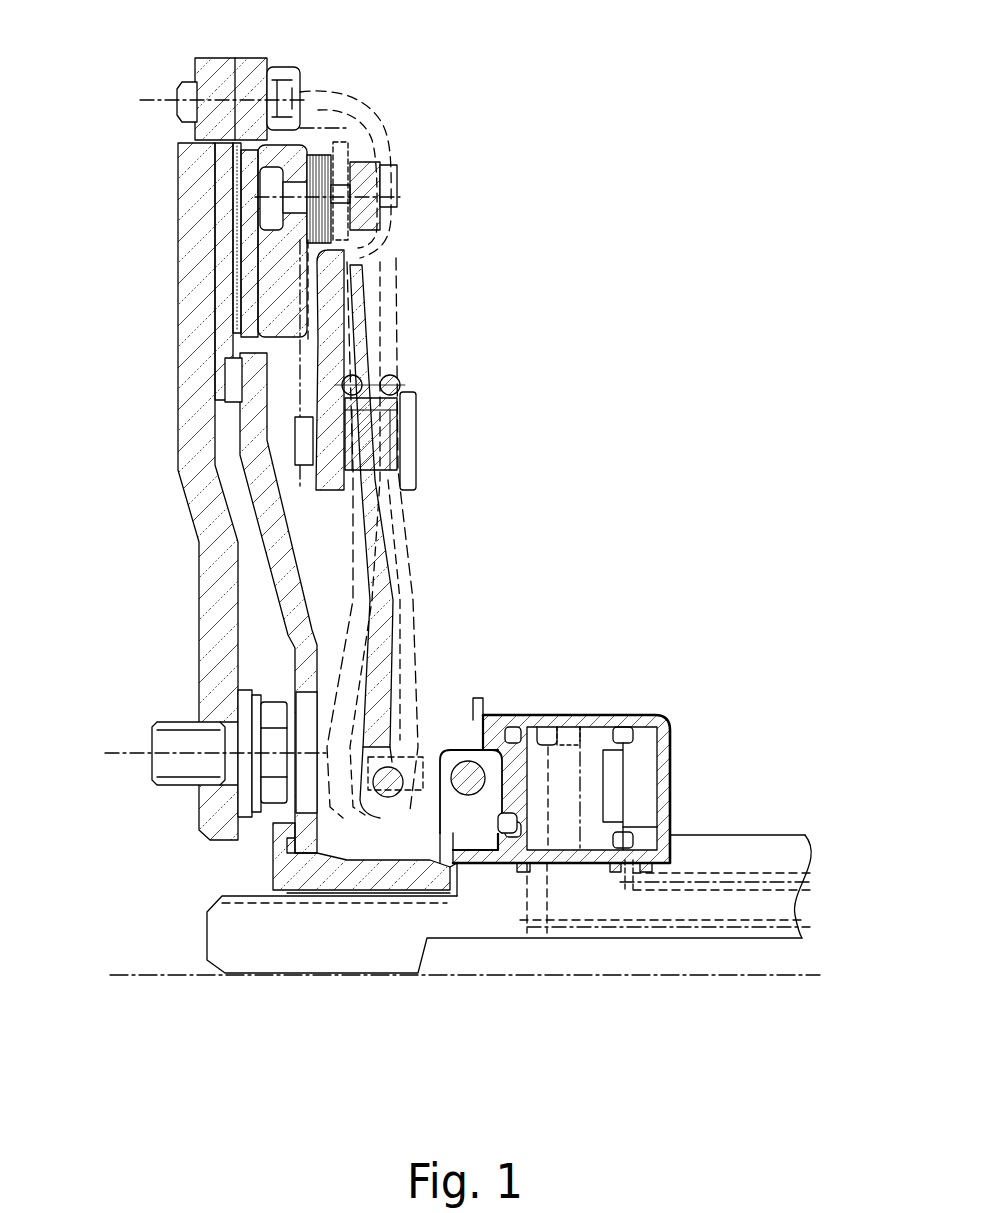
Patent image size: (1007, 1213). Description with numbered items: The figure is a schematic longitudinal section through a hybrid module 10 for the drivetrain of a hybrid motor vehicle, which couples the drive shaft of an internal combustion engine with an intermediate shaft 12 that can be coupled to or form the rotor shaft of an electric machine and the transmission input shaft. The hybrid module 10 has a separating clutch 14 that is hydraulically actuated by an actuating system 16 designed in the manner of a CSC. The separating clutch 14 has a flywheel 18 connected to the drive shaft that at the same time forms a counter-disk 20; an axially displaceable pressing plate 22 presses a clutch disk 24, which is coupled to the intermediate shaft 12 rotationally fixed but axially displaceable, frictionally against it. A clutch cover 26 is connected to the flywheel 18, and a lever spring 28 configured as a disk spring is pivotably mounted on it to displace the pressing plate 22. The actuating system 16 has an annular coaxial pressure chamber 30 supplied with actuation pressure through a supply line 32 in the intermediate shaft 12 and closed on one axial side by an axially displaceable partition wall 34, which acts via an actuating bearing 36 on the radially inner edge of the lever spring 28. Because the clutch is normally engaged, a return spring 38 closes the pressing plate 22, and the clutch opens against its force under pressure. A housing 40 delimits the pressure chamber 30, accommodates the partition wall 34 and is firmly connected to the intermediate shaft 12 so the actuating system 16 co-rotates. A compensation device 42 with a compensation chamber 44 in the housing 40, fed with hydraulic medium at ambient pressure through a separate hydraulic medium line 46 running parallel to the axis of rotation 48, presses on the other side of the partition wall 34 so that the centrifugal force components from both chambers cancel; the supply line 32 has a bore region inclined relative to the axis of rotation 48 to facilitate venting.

The hybrid module 10 is at (572, 155).
The intermediate shaft 12 is at (280, 943).
The separating clutch 14 is at (288, 161).
The actuating system 16 is at (583, 690).
The flywheel 18 is at (198, 497).
The counter-disk 20 is at (228, 208).
The pressing plate 22 is at (284, 252).
The clutch disk 24 is at (243, 272).
The clutch cover 26 is at (335, 328).
The lever spring 28 is at (378, 563).
The pressure chamber 30 is at (640, 748).
The supply line 32 is at (785, 882).
The partition wall 34 is at (613, 760).
The actuating bearing 36 is at (470, 768).
The return spring 38 is at (311, 166).
The housing 40 is at (664, 782).
The compensation device 42 is at (550, 815).
The compensation chamber 44 is at (568, 790).
The hydraulic medium line 46 is at (686, 927).
The axis of rotation 48 is at (790, 975).